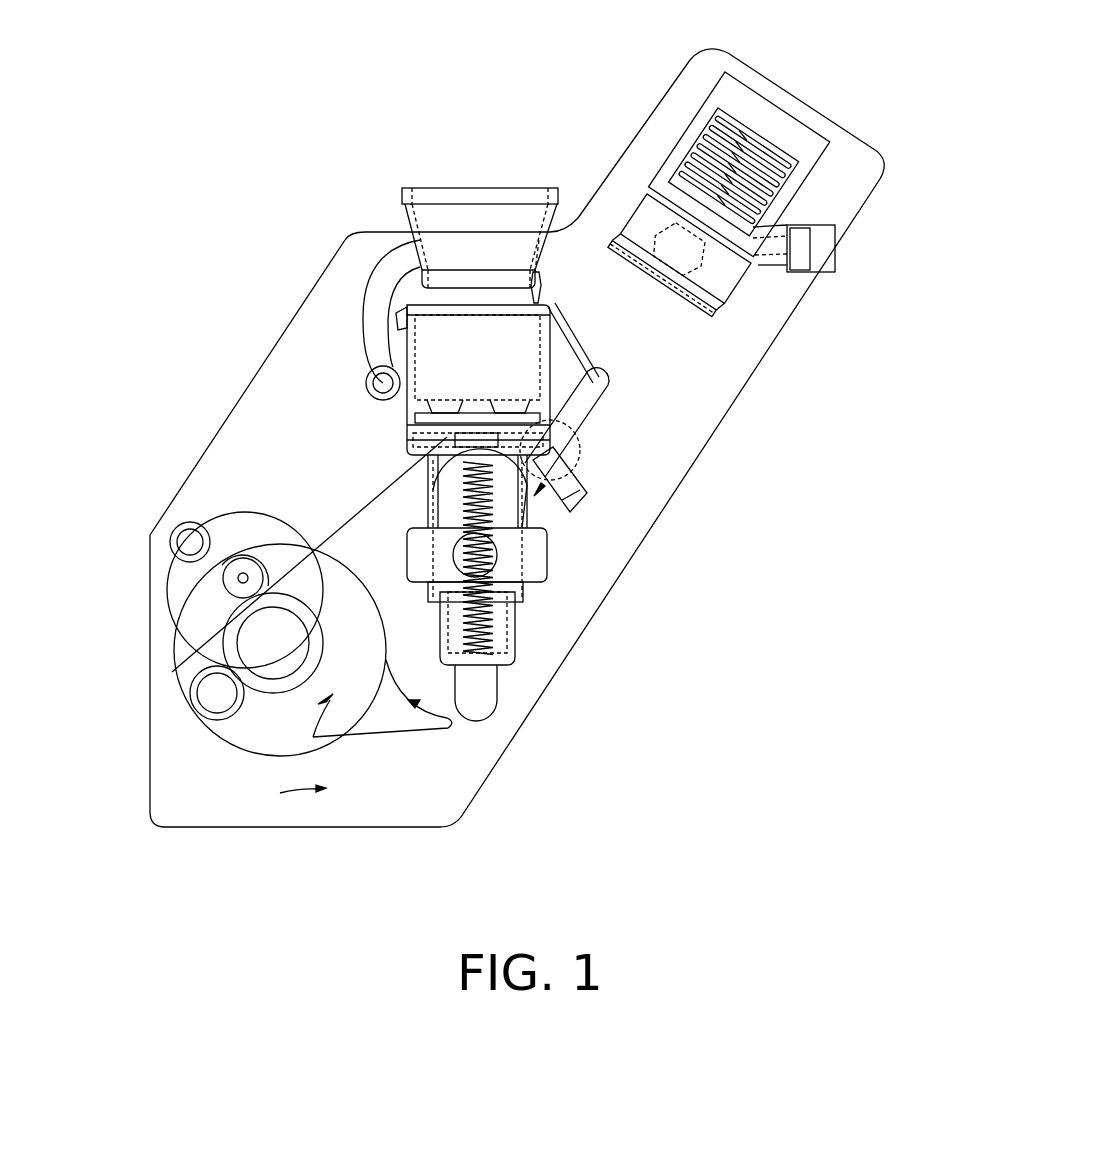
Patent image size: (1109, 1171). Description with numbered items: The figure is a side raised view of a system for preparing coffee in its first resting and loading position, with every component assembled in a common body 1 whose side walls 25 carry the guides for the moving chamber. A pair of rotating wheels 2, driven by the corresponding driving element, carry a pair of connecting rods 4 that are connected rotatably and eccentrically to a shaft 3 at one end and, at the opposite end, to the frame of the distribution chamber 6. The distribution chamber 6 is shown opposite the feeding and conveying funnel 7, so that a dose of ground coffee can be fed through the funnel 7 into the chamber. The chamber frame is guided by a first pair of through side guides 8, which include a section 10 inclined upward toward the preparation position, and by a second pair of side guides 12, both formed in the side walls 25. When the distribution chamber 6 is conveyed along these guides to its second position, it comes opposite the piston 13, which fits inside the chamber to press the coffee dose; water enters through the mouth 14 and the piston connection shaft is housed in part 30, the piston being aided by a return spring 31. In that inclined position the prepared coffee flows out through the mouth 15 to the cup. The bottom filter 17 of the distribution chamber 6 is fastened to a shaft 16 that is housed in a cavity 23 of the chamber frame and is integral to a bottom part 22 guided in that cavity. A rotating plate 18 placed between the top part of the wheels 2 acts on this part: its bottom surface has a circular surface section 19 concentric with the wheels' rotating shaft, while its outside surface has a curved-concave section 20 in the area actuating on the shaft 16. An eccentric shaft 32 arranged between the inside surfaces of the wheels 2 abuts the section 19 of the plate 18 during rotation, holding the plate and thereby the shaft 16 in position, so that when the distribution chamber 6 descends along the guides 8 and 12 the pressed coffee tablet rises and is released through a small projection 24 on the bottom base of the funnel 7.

The body 1 is at (590, 178).
The rotating wheels 2 is at (183, 590).
The shaft 3 is at (213, 697).
The connecting rods 4 is at (352, 522).
The distribution chamber 6 is at (437, 340).
The feeding and conveying funnel 7 is at (440, 190).
The first pair of through side guides 8 is at (578, 512).
The second section 10 is at (580, 402).
The second pair of side guides 12 is at (537, 503).
The piston 13 is at (737, 282).
The mouth 14 is at (798, 250).
The mouth 15 is at (585, 498).
The shaft 16 is at (490, 612).
The bottom filter 17 is at (540, 420).
The plate 18 is at (268, 522).
The circular surface section 19 is at (462, 557).
The curved-concave section 20 is at (455, 717).
The bottom part 22 is at (515, 658).
The cavity 23 is at (378, 370).
The small projection 24 is at (534, 272).
The side walls 25 is at (889, 162).
The part 30 is at (793, 113).
The return spring 31 is at (695, 158).
The eccentric shaft 32 is at (243, 577).